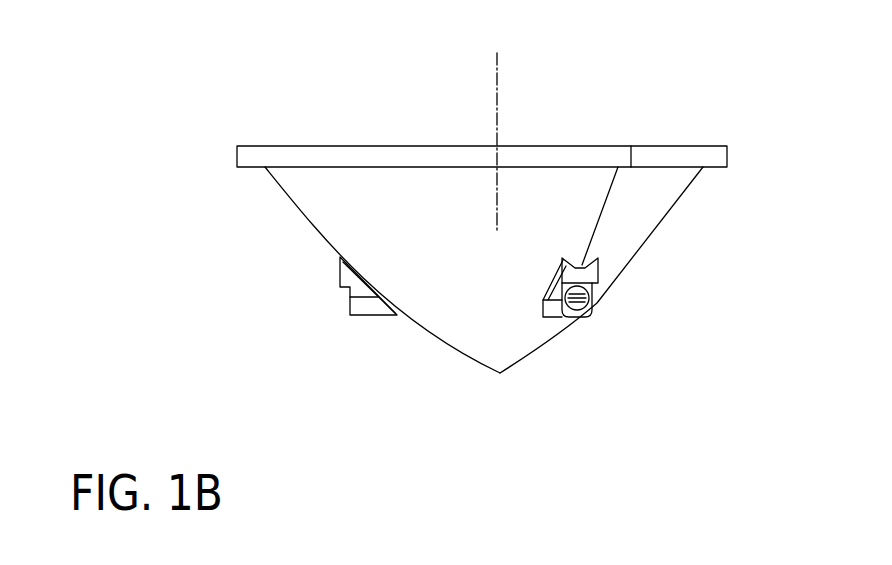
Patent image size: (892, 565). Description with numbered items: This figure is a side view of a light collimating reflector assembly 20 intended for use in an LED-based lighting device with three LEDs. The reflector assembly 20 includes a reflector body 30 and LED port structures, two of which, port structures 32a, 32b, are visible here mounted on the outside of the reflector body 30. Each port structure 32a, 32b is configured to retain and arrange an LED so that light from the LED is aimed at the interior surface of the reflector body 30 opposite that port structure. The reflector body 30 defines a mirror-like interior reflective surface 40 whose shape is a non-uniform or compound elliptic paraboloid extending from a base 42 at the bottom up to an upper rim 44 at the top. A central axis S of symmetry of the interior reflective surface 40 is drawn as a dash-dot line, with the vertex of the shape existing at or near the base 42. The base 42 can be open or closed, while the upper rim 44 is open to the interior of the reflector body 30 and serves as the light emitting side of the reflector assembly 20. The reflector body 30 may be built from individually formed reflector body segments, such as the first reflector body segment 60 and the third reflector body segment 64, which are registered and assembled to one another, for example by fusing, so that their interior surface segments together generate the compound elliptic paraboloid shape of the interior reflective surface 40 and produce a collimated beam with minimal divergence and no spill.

The reflector assembly 20 is at (192, 160).
The central axis S is at (497, 105).
The upper rim 44 is at (655, 143).
The reflector body 30 is at (655, 252).
The third reflector body segment 64 is at (443, 297).
The base 42 is at (497, 378).
The first reflector body segment 60 is at (647, 203).
The LED port structure 32a is at (338, 308).
The LED port structure 32b is at (590, 312).
The interior reflective surface 40 is at (568, 298).